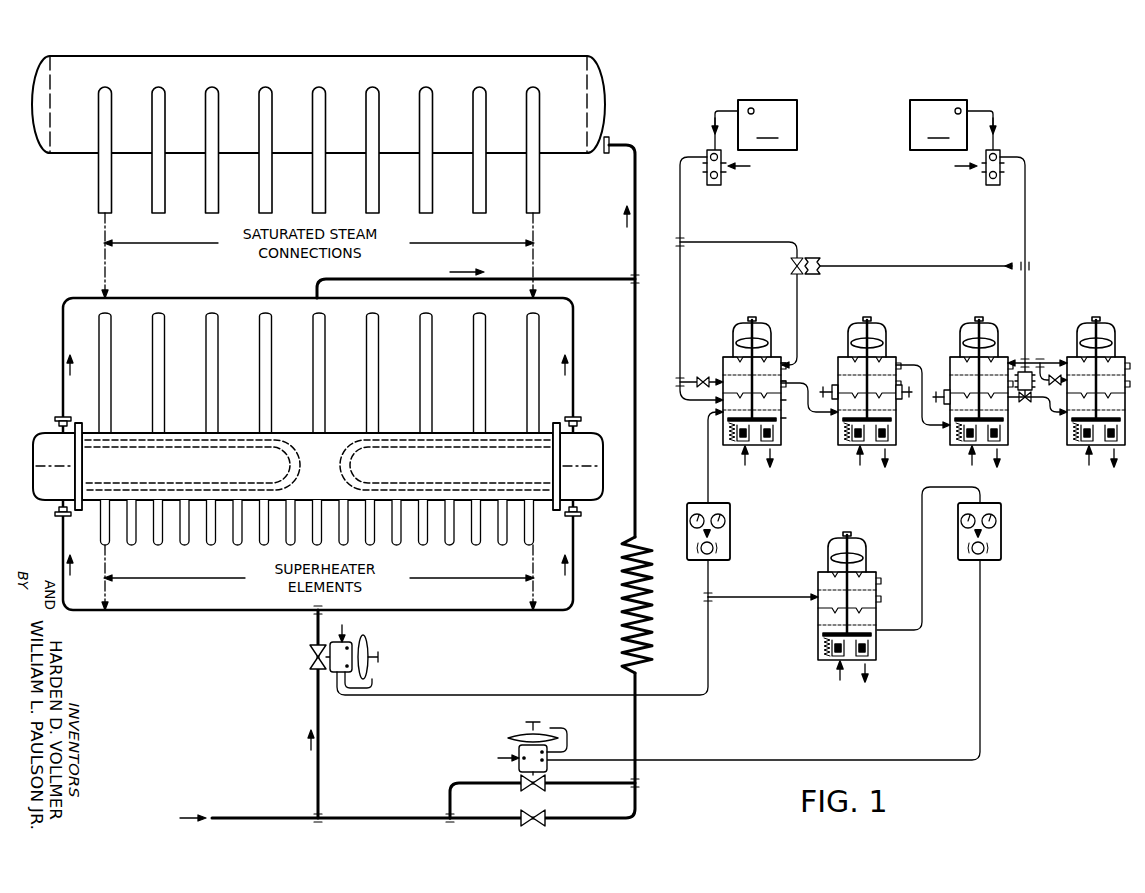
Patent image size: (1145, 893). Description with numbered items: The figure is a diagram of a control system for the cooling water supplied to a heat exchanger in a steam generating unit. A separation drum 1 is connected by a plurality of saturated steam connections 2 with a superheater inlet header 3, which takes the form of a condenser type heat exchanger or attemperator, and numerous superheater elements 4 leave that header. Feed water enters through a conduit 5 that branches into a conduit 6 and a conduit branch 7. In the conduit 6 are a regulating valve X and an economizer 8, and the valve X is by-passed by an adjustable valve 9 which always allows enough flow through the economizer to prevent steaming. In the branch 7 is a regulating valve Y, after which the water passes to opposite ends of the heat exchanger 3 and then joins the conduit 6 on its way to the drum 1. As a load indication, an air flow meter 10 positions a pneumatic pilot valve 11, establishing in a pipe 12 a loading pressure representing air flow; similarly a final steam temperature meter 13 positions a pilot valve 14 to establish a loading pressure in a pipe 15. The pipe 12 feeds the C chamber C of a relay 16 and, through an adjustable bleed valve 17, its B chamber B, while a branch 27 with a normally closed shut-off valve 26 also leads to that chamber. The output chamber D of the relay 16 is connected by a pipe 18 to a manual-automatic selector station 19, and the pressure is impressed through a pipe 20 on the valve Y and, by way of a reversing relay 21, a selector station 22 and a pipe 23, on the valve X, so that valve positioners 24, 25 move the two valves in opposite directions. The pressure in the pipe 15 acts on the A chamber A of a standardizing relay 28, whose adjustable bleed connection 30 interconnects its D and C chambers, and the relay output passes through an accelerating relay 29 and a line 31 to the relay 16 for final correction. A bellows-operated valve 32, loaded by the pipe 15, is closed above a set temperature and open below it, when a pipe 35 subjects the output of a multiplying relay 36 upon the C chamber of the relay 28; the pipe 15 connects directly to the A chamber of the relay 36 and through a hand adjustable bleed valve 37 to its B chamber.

The separation drum 1 is at (603, 82).
The saturated steam connections 2 is at (472, 338).
The superheater inlet header 3 is at (497, 432).
The superheater elements 4 is at (476, 530).
The conduit 5 is at (255, 818).
The conduit 6 is at (636, 729).
The conduit branch 7 is at (320, 764).
The economizer 8 is at (631, 605).
The adjustable valve 9 is at (546, 811).
The air flow meter 10 is at (758, 107).
The pneumatic pilot valve 11 is at (722, 183).
The pipe 12 is at (681, 222).
The meter 13 is at (943, 105).
The pilot valve 14 is at (986, 182).
The pipe 15 is at (1026, 228).
The relay 16 is at (762, 325).
The adjustable bleed valve 17 is at (703, 370).
The pipe 18 is at (707, 461).
The manual-automatic selector station 19 is at (731, 523).
The pipe 20 is at (709, 669).
The reversing relay 21 is at (853, 541).
The selector station 22 is at (1003, 527).
The pipe 23 is at (981, 664).
The valve positioner 24 is at (518, 766).
The valve positioner 25 is at (354, 640).
The shut-off valve 26 is at (790, 266).
The branch 27 is at (745, 245).
The standardizing relay 28 is at (989, 325).
The accelerating relay 29 is at (877, 325).
The adjustable bleed connection 30 is at (944, 393).
The signal line 31 is at (916, 366).
The valve 32 is at (1025, 403).
The pipe 35 is at (1055, 416).
The multiplying relay 36 is at (1106, 325).
The hand adjustable bleed valve 37 is at (1052, 386).
The A chamber A is at (777, 364).
The B chamber B is at (775, 382).
The C chamber C is at (773, 400).
The D chamber D is at (775, 418).
The regulating valve X is at (514, 762).
The regulating valve Y is at (308, 657).